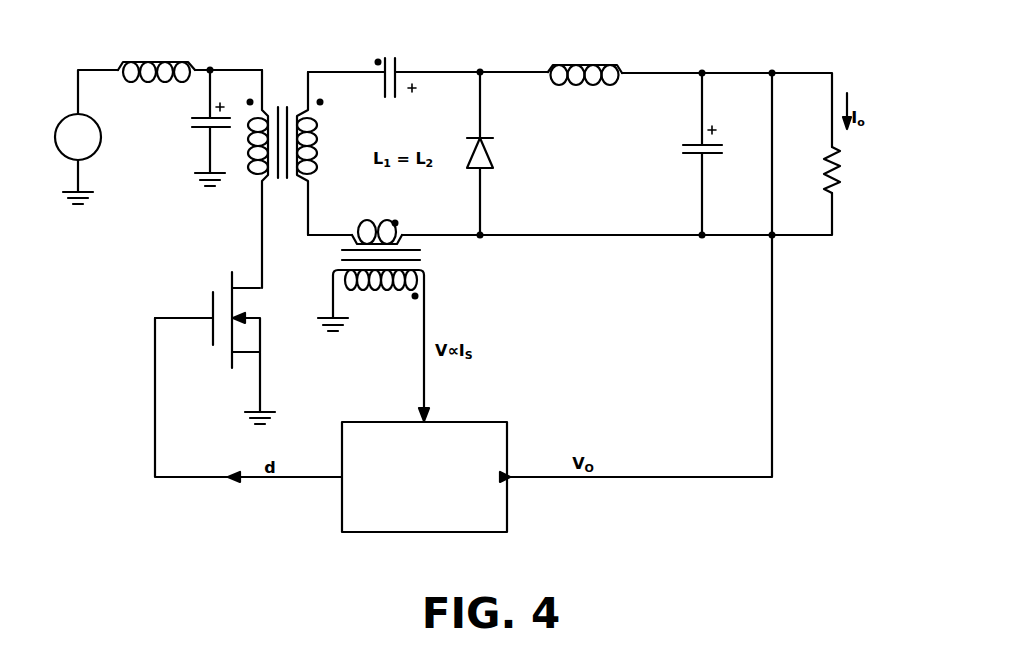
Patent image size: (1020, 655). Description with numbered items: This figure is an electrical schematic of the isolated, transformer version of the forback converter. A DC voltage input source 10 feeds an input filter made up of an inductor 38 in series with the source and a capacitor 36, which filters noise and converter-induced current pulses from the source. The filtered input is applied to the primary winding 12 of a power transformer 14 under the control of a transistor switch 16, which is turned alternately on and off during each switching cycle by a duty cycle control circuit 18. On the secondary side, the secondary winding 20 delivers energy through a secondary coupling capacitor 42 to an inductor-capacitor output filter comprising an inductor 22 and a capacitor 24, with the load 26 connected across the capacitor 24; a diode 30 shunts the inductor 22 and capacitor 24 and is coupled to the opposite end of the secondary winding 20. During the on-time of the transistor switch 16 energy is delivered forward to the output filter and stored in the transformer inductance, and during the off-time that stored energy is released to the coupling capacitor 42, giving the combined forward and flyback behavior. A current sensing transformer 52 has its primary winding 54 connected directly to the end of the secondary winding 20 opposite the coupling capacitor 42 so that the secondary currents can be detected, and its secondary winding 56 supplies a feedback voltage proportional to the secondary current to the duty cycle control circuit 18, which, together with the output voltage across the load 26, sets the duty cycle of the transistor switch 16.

The DC voltage input source 10 is at (102, 133).
The inductor 38 is at (147, 67).
The capacitor 36 is at (192, 125).
The primary winding 12 is at (253, 125).
The power transformer 14 is at (283, 100).
The secondary winding 20 is at (314, 140).
The secondary coupling capacitor 42 is at (388, 97).
The diode 30 is at (485, 137).
The inductor 22 is at (583, 92).
The capacitor 24 is at (710, 158).
The load 26 is at (823, 167).
The primary winding 54 is at (382, 223).
The secondary winding 56 is at (382, 292).
The current sensing transformer 52 is at (430, 263).
The transistor switch 16 is at (255, 310).
The duty cycle control circuit 18 is at (485, 422).